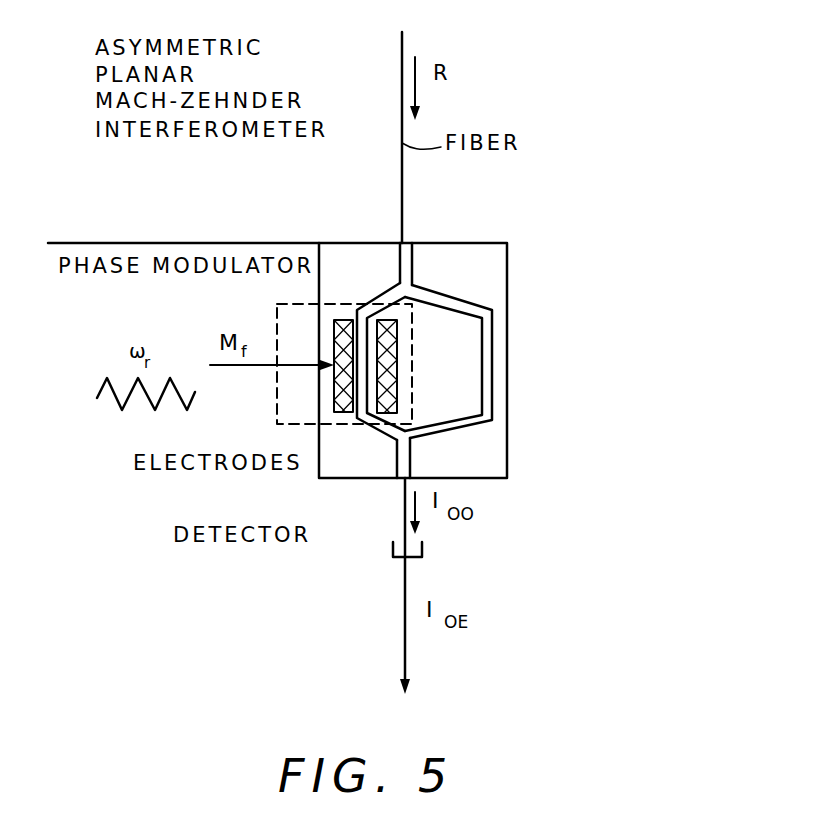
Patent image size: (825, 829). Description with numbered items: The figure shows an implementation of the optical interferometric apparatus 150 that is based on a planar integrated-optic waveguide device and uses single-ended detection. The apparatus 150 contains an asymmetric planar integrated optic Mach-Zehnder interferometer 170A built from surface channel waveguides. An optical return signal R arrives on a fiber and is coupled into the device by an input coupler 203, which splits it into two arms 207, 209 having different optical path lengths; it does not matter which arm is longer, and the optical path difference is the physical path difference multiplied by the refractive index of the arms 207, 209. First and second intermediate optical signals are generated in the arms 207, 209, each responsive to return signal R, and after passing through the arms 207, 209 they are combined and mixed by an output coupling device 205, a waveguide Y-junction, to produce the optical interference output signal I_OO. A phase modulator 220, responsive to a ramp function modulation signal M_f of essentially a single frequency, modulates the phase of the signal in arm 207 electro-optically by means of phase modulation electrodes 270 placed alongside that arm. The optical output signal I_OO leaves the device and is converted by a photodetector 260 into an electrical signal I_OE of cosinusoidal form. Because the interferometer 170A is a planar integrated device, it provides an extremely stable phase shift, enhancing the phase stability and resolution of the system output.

The interferometric apparatus 150 is at (678, 268).
The asymmetric planar integrated optic Mach-Zehnder interferometer 170A is at (390, 330).
The input coupler 203 is at (415, 281).
The output coupling device 205 is at (415, 445).
The first arm 207 is at (385, 441).
The second arm 209 is at (482, 425).
The phase modulator 220 is at (287, 320).
The photodetector 260 is at (392, 548).
The phase modulation electrodes 270 is at (345, 413).